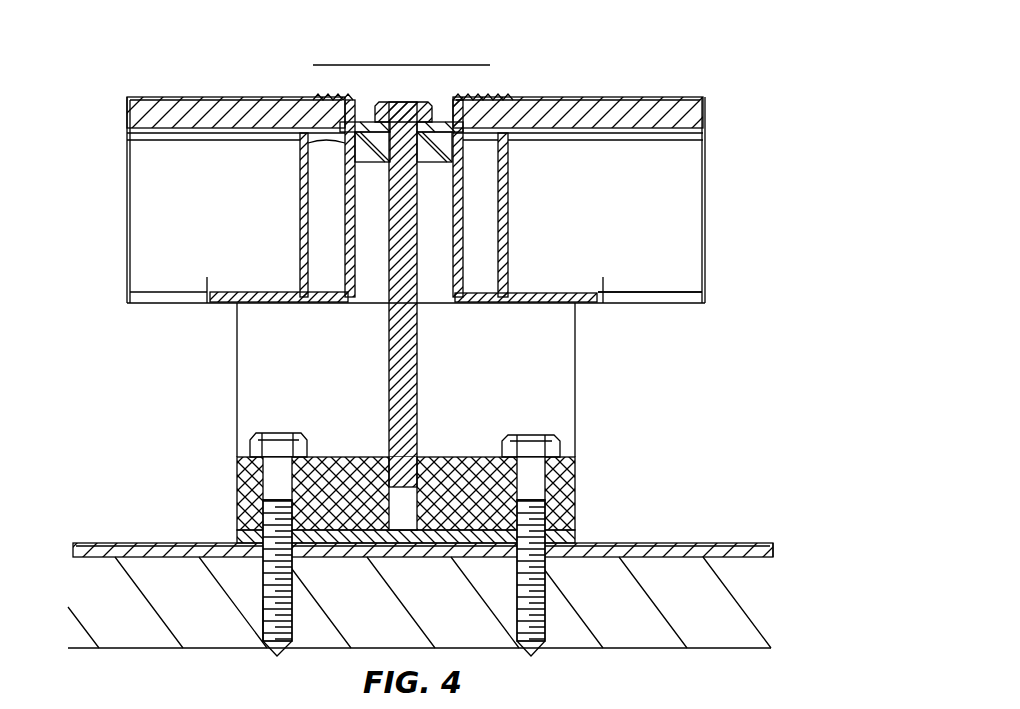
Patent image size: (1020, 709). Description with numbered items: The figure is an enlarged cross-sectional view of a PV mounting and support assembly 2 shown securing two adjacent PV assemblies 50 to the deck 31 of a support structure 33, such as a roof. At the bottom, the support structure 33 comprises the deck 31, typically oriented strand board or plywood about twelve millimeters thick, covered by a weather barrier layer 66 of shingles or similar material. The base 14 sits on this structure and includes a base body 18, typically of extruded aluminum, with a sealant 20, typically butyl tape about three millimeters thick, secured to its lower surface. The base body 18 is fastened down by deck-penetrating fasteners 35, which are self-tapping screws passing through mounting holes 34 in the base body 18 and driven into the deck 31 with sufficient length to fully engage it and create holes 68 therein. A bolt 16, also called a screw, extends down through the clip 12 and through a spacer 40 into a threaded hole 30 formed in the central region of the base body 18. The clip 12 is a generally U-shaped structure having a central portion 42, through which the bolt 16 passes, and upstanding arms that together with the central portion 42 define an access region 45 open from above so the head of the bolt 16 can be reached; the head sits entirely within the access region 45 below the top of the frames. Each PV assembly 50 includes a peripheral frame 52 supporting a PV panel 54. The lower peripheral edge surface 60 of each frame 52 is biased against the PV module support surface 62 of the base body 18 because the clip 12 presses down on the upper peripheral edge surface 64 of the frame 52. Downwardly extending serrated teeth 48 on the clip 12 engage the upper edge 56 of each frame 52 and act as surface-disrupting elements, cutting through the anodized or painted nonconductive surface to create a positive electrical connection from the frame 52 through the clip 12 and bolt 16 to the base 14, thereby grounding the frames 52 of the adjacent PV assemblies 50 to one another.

The PV mounting and support assembly 2 is at (443, 344).
The clip 12 is at (389, 250).
The base 14 is at (449, 495).
The bolt 16 is at (387, 390).
The base body 18 is at (582, 477).
The sealant 20 is at (563, 537).
The threaded hole 30 is at (401, 505).
The deck 31 is at (740, 598).
The support structure 33 is at (718, 538).
The mounting holes 34 is at (530, 512).
The deck-penetrating fastener 35 is at (277, 450).
The spacer 40 is at (347, 150).
The central portion 42 is at (363, 108).
The access region 45 is at (403, 92).
The teeth 48 is at (487, 100).
The PV assembly 50 is at (389, 178).
The frame 52 is at (580, 303).
The PV panel 54 is at (128, 117).
The upper edge 56 is at (480, 117).
The lower peripheral edge surface 60 is at (578, 308).
The PV module support surface 62 is at (533, 293).
The upper peripheral edge surface 64 is at (330, 100).
The weather barrier layer 66 is at (773, 552).
The holes 68 is at (267, 593).